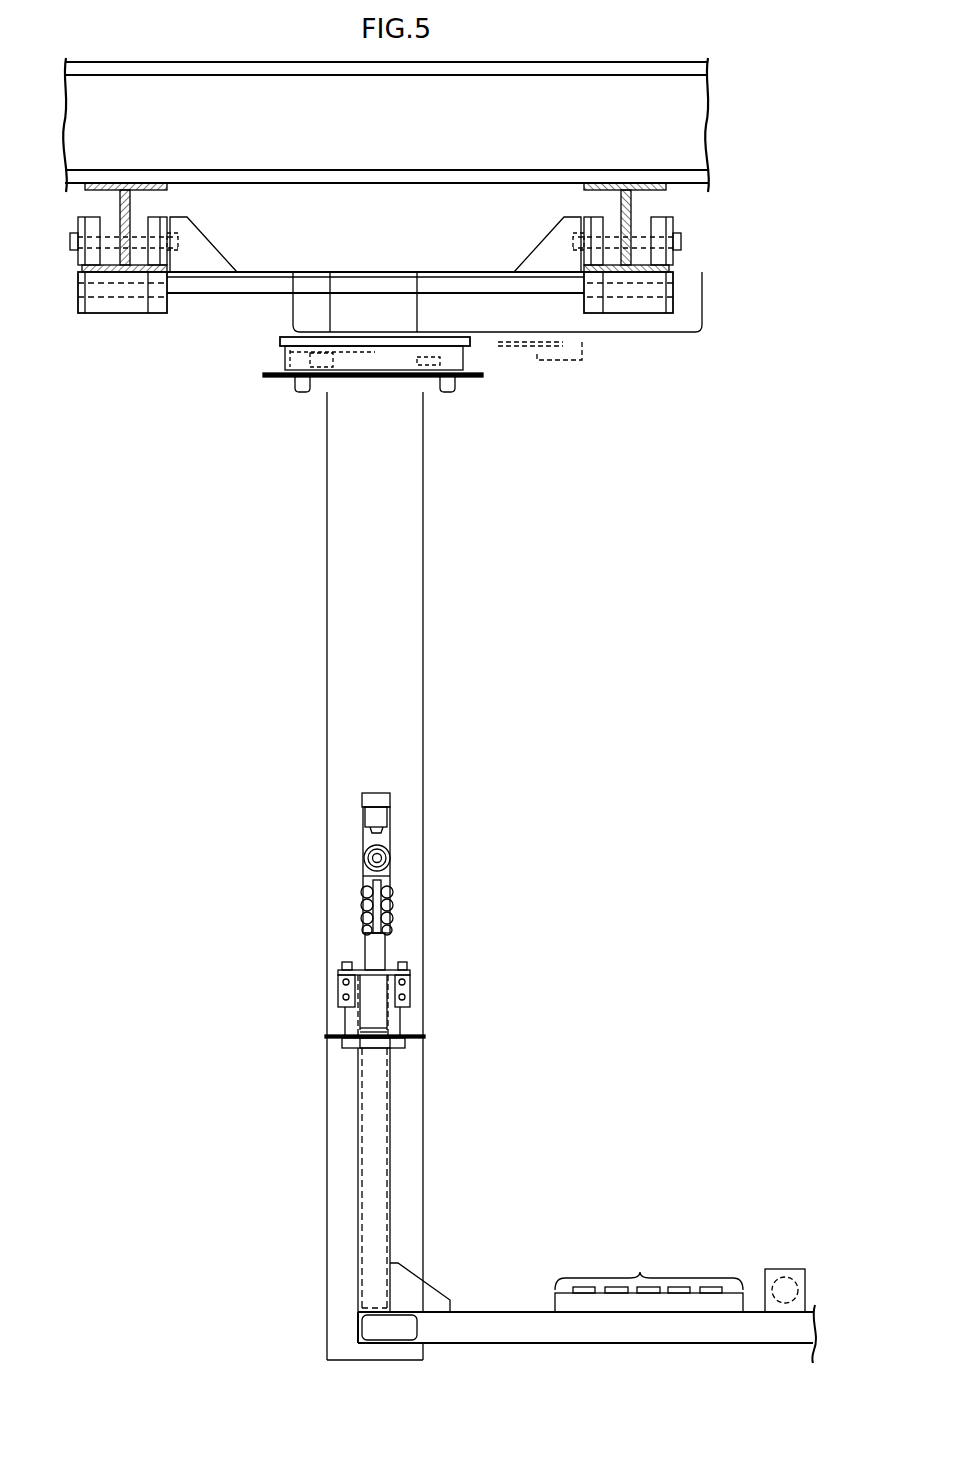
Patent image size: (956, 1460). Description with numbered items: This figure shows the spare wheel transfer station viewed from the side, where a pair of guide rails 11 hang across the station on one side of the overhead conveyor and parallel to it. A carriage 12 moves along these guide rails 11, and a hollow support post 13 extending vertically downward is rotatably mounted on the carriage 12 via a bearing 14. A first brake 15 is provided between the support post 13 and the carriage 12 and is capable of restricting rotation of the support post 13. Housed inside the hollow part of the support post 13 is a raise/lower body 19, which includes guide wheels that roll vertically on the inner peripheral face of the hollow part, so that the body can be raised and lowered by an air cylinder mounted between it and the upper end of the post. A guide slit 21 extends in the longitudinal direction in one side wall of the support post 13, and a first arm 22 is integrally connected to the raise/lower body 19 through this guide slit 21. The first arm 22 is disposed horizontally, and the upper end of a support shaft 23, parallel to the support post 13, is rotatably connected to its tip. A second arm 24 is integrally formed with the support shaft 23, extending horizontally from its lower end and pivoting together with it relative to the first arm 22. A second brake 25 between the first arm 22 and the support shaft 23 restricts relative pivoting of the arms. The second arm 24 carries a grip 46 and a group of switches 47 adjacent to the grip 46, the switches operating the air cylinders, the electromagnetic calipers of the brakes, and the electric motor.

The guide rail 11 is at (127, 215).
The carriage 12 is at (518, 323).
The support post 13 is at (412, 660).
The bearing 14 is at (335, 358).
The first brake 15 is at (270, 392).
The raise/lower body 19 is at (392, 910).
The guide slit 21 is at (380, 1122).
The first arm 22 is at (378, 955).
The support shaft 23 is at (375, 1187).
The second arm 24 is at (522, 1312).
The second brake 25 is at (414, 1030).
The grip 46 is at (785, 1277).
The group of switches 47 is at (649, 1277).